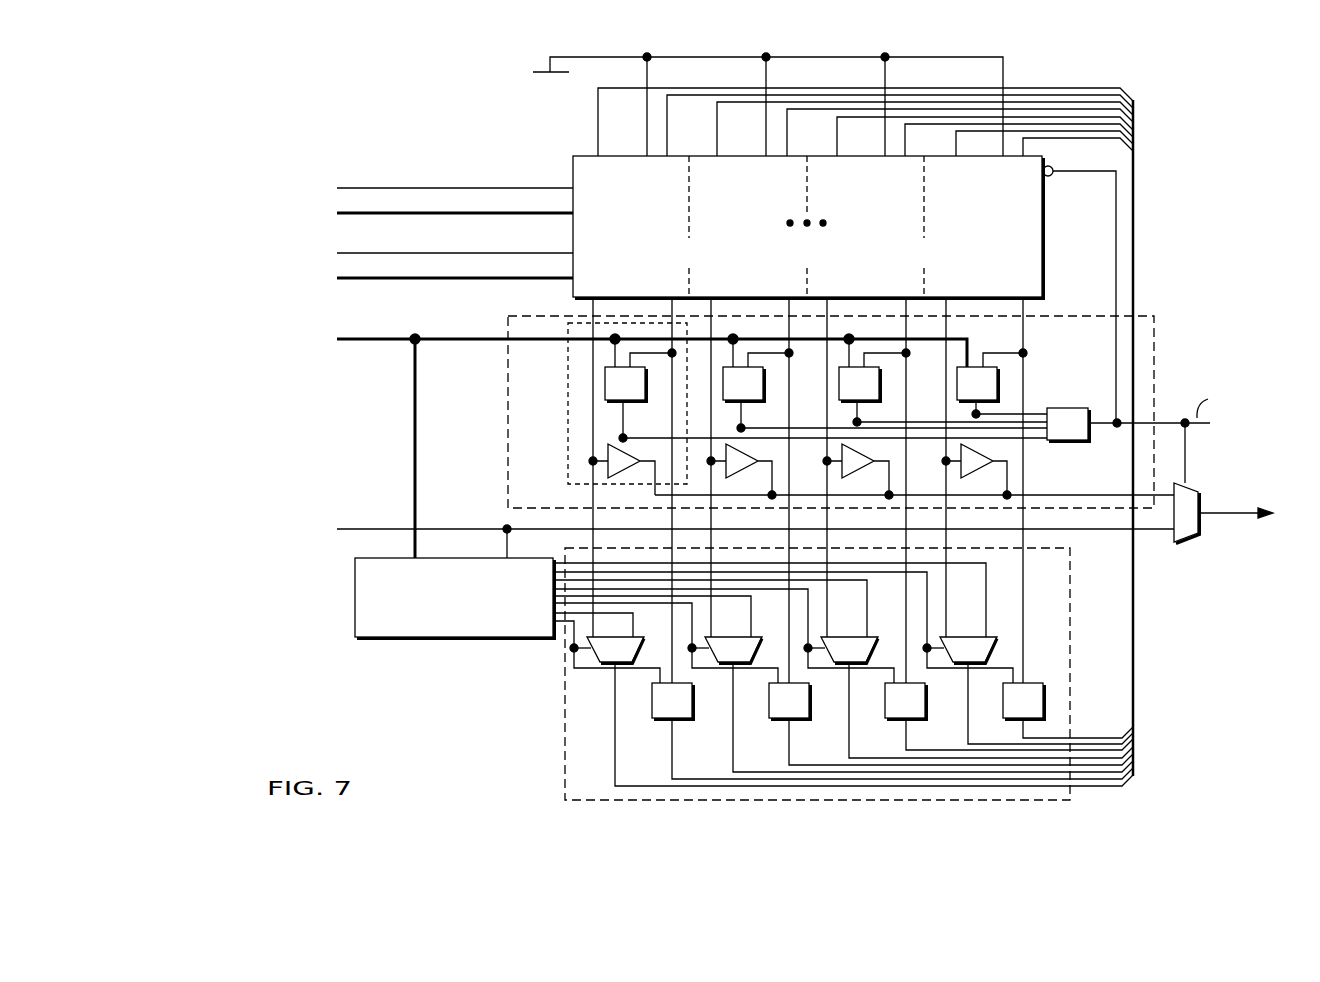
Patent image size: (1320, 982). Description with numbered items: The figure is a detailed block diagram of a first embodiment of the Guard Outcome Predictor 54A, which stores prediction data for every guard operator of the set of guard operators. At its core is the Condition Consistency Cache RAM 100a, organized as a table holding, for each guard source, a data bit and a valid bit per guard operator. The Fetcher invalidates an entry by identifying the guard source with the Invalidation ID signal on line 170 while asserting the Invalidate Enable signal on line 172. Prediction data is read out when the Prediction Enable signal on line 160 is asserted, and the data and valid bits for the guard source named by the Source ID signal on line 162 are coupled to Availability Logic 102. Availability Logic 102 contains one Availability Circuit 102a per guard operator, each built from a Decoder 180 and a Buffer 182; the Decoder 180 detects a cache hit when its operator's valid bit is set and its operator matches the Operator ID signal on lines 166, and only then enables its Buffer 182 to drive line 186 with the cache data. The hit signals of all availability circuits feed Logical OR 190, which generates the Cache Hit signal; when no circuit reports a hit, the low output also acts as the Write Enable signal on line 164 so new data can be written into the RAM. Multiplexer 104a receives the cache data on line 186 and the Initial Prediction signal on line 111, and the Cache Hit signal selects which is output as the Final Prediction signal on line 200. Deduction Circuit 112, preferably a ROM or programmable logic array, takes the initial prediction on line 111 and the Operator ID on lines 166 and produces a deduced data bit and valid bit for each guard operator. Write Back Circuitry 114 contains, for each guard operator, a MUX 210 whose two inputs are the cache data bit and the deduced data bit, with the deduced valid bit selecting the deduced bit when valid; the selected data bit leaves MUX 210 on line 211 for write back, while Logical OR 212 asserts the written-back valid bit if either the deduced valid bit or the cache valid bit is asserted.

The guard outcome predictor 54A is at (287, 73).
The Invalidate Enable signal line 172 is at (425, 186).
The Invalidation ID signal line 170 is at (465, 215).
The Prediction Enable signal line 160 is at (428, 252).
The Source ID signal line 162 is at (420, 281).
The Operator ID signal lines 166 is at (370, 336).
The Condition Consistency Cache RAM 100a is at (632, 287).
The Write Enable signal line 164 is at (1115, 272).
The Availability Logic 102 is at (507, 383).
The Availability Circuit 102a is at (567, 418).
The Decoder 180 is at (643, 395).
The Buffer 182 is at (613, 481).
The Logical OR 190 is at (1063, 407).
The cache data line 186 is at (1115, 493).
The Initial Prediction signal line 111 is at (361, 527).
The Deduction Circuit 112 is at (392, 640).
The multiplexer 104a is at (1186, 543).
The Final Prediction signal line 200 is at (1230, 517).
The MUX 210 is at (645, 648).
The writeback data line 211 is at (612, 720).
The Logical OR 212 is at (657, 720).
The Write Back Circuitry 114 is at (558, 737).